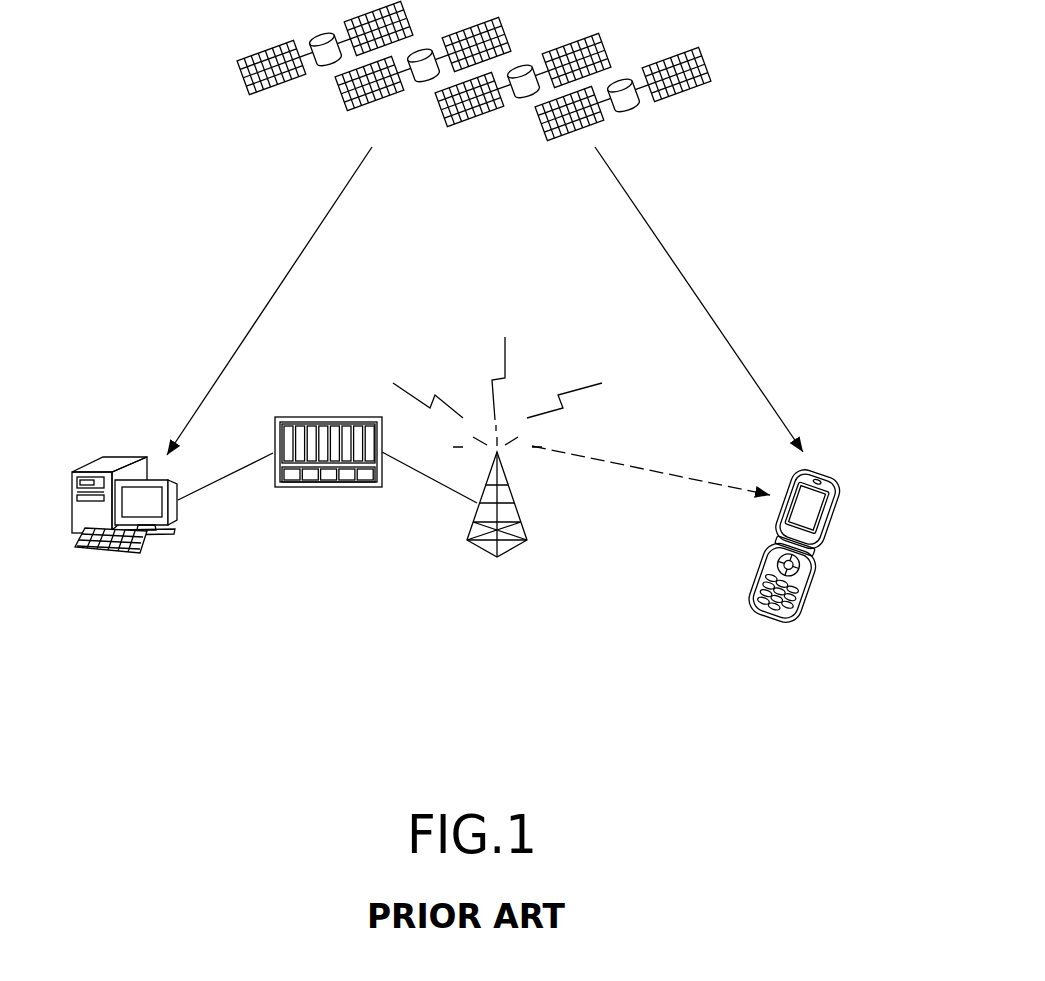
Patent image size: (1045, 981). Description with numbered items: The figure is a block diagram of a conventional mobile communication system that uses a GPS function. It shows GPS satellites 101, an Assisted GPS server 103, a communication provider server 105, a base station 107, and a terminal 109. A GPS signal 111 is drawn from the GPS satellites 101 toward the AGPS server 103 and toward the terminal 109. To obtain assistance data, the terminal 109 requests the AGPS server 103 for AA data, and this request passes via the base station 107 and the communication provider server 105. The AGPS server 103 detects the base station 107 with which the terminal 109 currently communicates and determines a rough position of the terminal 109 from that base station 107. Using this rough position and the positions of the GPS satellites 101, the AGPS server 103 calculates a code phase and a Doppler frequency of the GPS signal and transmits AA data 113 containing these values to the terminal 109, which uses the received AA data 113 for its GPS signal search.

The GPS satellites 101 is at (444, 79).
The Assisted GPS (AGPS) server 103 is at (125, 537).
The communication provider server 105 is at (325, 499).
The base station 107 is at (497, 494).
The terminal 109 is at (797, 577).
The GPS signal 111 is at (480, 301).
The AA data 113 is at (651, 485).